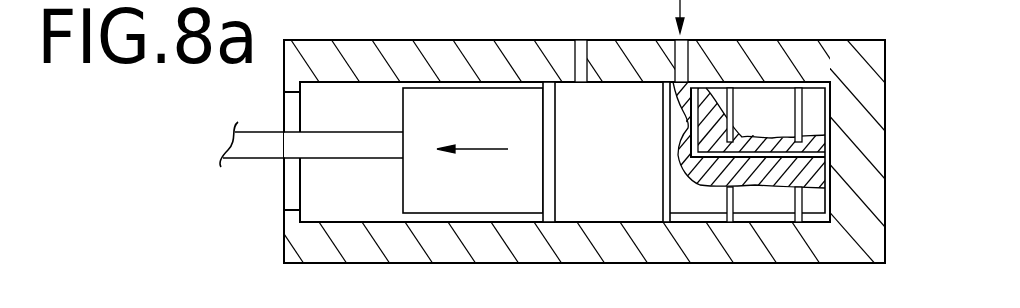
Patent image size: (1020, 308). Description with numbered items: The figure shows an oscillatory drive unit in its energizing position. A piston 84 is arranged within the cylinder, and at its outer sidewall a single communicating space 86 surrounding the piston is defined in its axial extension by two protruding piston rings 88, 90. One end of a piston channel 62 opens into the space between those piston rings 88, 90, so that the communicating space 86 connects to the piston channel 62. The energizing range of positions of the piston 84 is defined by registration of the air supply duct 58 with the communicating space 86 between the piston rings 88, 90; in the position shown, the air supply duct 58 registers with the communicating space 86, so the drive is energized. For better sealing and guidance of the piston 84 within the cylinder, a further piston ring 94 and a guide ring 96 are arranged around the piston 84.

The air supply duct 58 is at (680, 67).
The piston channel 62 is at (697, 139).
The piston 84 is at (425, 178).
The communicating space 86 is at (708, 93).
The piston ring 88 is at (733, 109).
The piston ring 90 is at (662, 125).
The piston ring 94 is at (788, 198).
The guide ring 96 is at (543, 181).